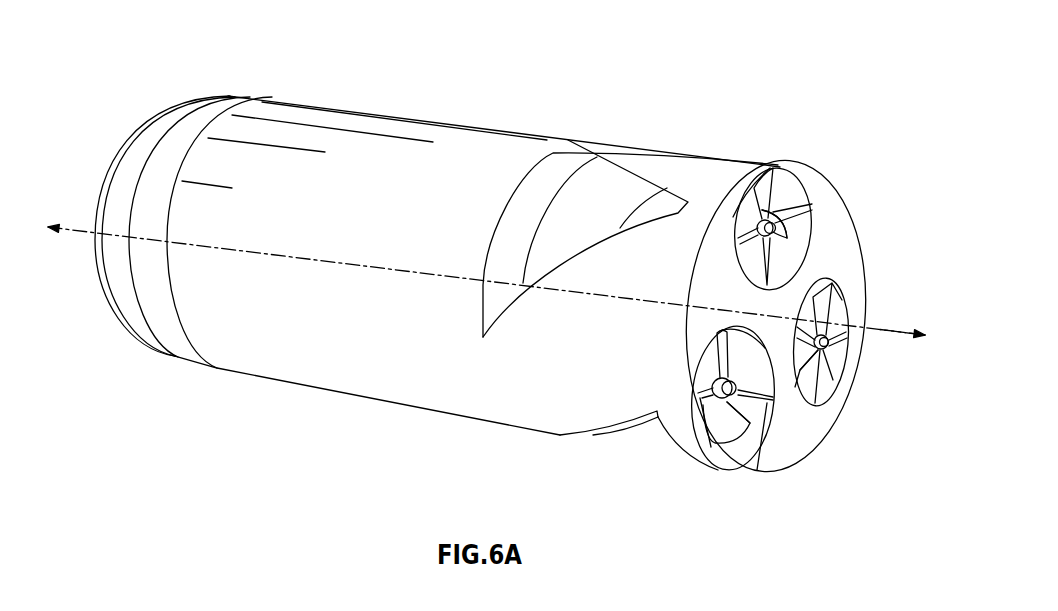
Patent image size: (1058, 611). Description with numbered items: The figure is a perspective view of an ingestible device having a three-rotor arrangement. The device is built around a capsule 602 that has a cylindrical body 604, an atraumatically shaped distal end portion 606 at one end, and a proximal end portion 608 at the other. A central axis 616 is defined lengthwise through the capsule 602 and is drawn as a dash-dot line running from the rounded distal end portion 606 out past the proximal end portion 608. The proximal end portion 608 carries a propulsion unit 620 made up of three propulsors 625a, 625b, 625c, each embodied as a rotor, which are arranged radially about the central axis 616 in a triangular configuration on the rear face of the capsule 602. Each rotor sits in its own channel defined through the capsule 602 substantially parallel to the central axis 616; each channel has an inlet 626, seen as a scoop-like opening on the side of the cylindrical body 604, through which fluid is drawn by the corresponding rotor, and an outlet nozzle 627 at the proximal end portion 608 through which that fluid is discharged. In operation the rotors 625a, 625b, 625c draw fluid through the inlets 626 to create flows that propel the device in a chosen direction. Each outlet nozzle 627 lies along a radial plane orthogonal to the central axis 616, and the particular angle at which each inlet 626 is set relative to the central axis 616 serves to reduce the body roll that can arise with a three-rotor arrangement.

The capsule 602 is at (175, 390).
The cylindrical body 604 is at (293, 380).
The atraumatically shaped distal end portion 606 is at (216, 86).
The proximal end portion 608 is at (710, 85).
The central axis 616 is at (82, 227).
The propulsion unit 620 is at (880, 319).
The propulsor 625a is at (717, 438).
The propulsor 625b is at (785, 168).
The propulsor 625c is at (837, 293).
The inlet 626 is at (602, 185).
The outlet nozzle 627 is at (805, 224).